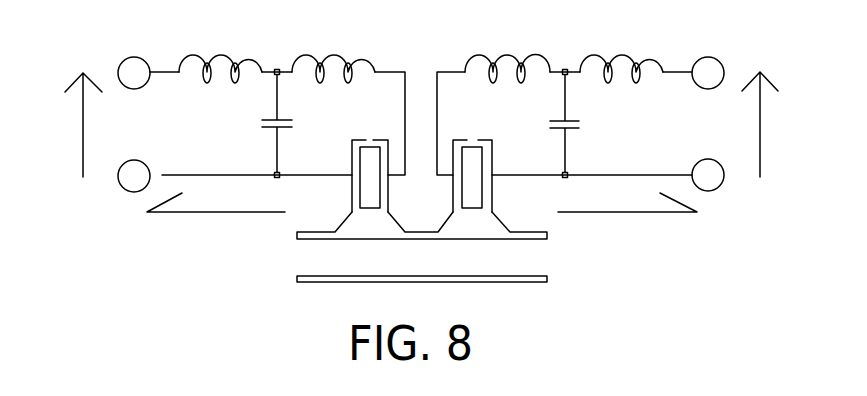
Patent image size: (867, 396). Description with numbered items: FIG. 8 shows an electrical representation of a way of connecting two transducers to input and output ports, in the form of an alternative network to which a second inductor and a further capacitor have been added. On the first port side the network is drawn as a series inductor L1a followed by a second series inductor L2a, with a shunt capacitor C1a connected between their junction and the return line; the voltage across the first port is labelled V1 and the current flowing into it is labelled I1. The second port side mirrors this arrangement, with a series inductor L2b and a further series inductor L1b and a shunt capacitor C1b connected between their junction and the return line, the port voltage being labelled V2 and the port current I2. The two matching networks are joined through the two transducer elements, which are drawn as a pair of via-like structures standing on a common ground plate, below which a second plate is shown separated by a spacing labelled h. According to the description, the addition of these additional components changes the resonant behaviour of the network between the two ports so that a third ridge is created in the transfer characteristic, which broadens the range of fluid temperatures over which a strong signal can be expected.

The first inductor of port 1 matching network L1a is at (220, 50).
The second inductor of port 1 matching network L2a is at (333, 50).
The shunt capacitor of port 1 matching network C1a is at (299, 123).
The second inductor of port 2 matching network L2b is at (507, 50).
The first inductor of port 2 matching network L1b is at (621, 50).
The shunt capacitor of port 2 matching network C1b is at (588, 123).
The port 1 voltage V1 is at (73, 125).
The port 2 voltage V2 is at (769, 124).
The port 1 current I1 is at (216, 196).
The port 2 current I2 is at (627, 198).
The substrate height between ground plane and lower plate h is at (550, 239).